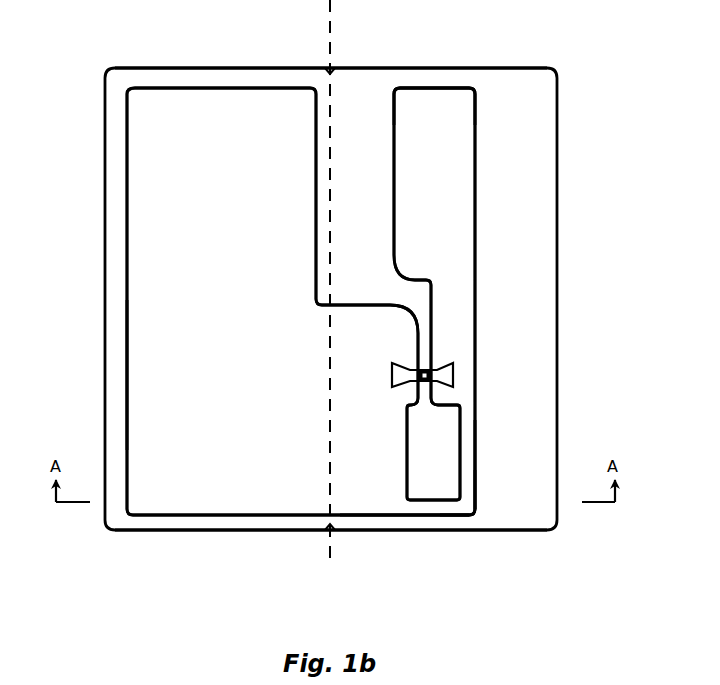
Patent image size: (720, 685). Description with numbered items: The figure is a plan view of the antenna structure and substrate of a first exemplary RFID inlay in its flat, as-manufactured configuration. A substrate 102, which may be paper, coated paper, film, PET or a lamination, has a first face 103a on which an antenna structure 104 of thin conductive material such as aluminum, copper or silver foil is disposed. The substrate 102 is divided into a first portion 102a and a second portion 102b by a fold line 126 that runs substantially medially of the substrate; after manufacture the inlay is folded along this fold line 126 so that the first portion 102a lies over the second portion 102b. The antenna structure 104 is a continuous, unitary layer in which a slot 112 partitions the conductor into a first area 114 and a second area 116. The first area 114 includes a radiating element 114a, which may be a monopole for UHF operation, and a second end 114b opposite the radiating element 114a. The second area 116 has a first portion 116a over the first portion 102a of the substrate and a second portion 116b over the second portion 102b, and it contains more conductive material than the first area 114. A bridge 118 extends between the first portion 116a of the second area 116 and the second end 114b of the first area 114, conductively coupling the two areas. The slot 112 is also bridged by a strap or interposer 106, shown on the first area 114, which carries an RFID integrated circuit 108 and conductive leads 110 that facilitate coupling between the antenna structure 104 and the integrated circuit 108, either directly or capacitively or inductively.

The substrate 102 is at (105, 77).
The first portion of substrate 102a is at (452, 566).
The second portion of substrate 102b is at (226, 560).
The first face of substrate 103a is at (258, 78).
The antenna structure 104 is at (162, 297).
The strap or interposer 106 is at (433, 379).
The RFID integrated circuit 108 is at (415, 383).
The conductive leads 110 is at (402, 377).
The slot 112 is at (370, 333).
The first area 114 is at (434, 298).
The radiating element 114a is at (437, 113).
The second end of first area 114b is at (467, 493).
The second area 116 is at (298, 301).
The first portion of second area 116a is at (380, 478).
The second portion of second area 116b is at (200, 372).
The bridge 118 is at (432, 507).
The fold line 126 is at (327, 543).